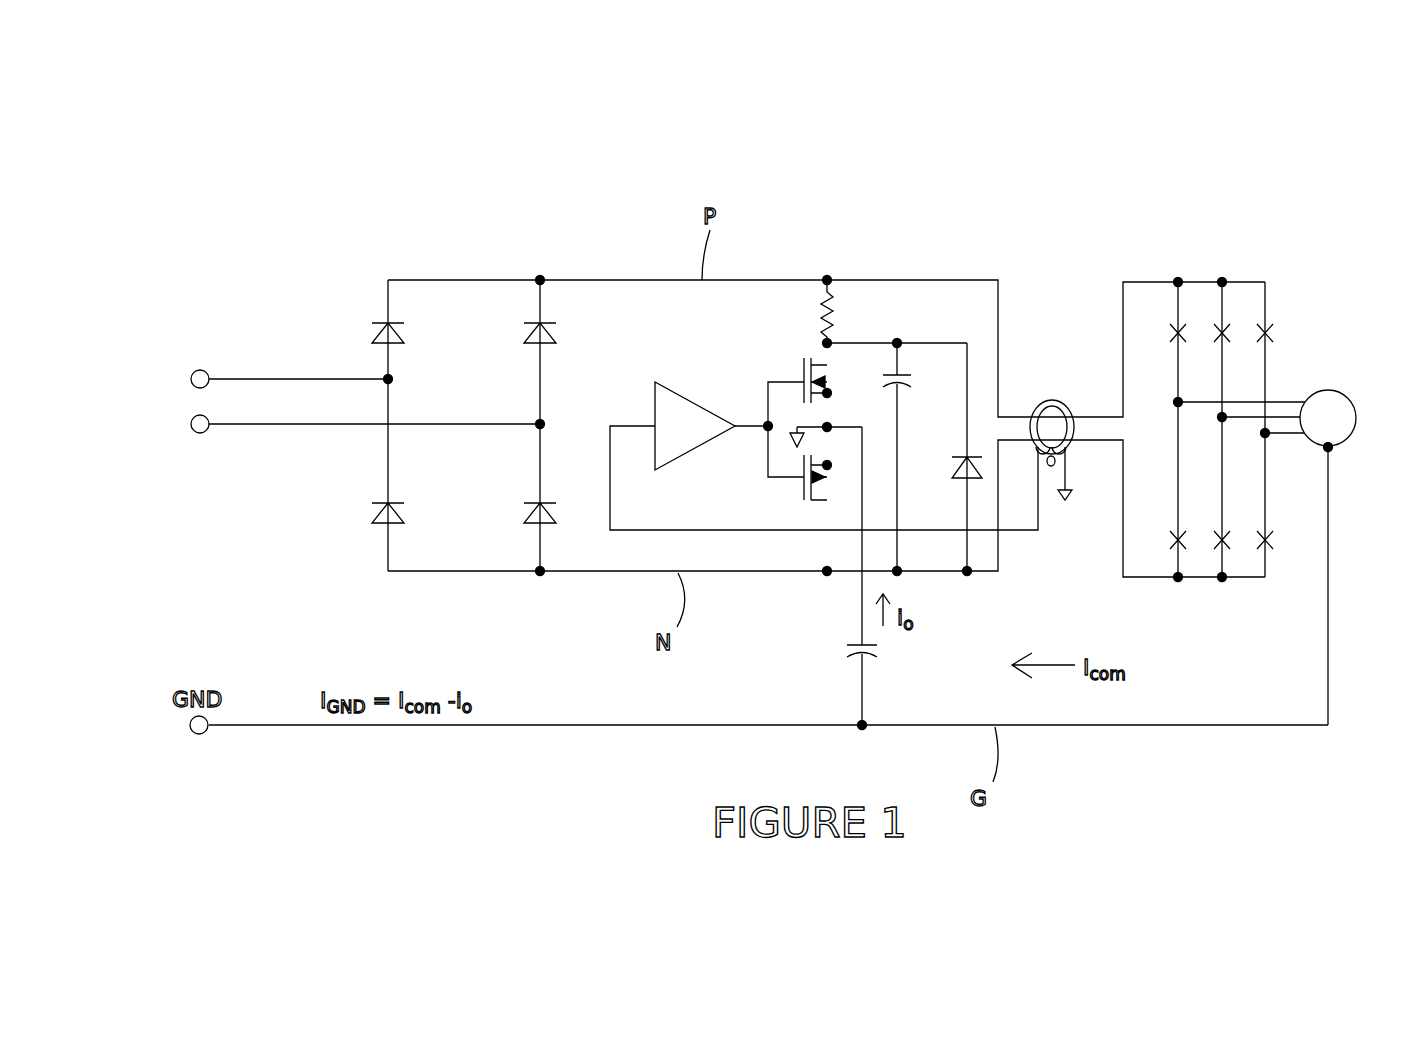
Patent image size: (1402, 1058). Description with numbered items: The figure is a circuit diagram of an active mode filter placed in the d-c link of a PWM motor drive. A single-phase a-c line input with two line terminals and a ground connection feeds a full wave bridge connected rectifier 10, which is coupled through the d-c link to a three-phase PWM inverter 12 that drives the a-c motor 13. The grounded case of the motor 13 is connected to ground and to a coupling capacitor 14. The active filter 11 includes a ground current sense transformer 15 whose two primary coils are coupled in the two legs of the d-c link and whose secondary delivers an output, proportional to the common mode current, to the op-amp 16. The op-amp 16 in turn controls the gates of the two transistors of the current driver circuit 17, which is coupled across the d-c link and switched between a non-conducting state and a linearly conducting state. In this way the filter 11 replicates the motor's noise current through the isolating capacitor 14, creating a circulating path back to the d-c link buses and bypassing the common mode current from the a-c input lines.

The full wave bridge connected rectifier 10 is at (428, 233).
The active filter 11 is at (842, 248).
The PWM inverter 12 is at (1298, 303).
The a-c motor 13 is at (1350, 448).
The coupling capacitor 14 is at (845, 652).
The ground current sense transformer 15 is at (1072, 445).
The op-amp 16 is at (678, 413).
The current driver circuit 17 is at (870, 337).